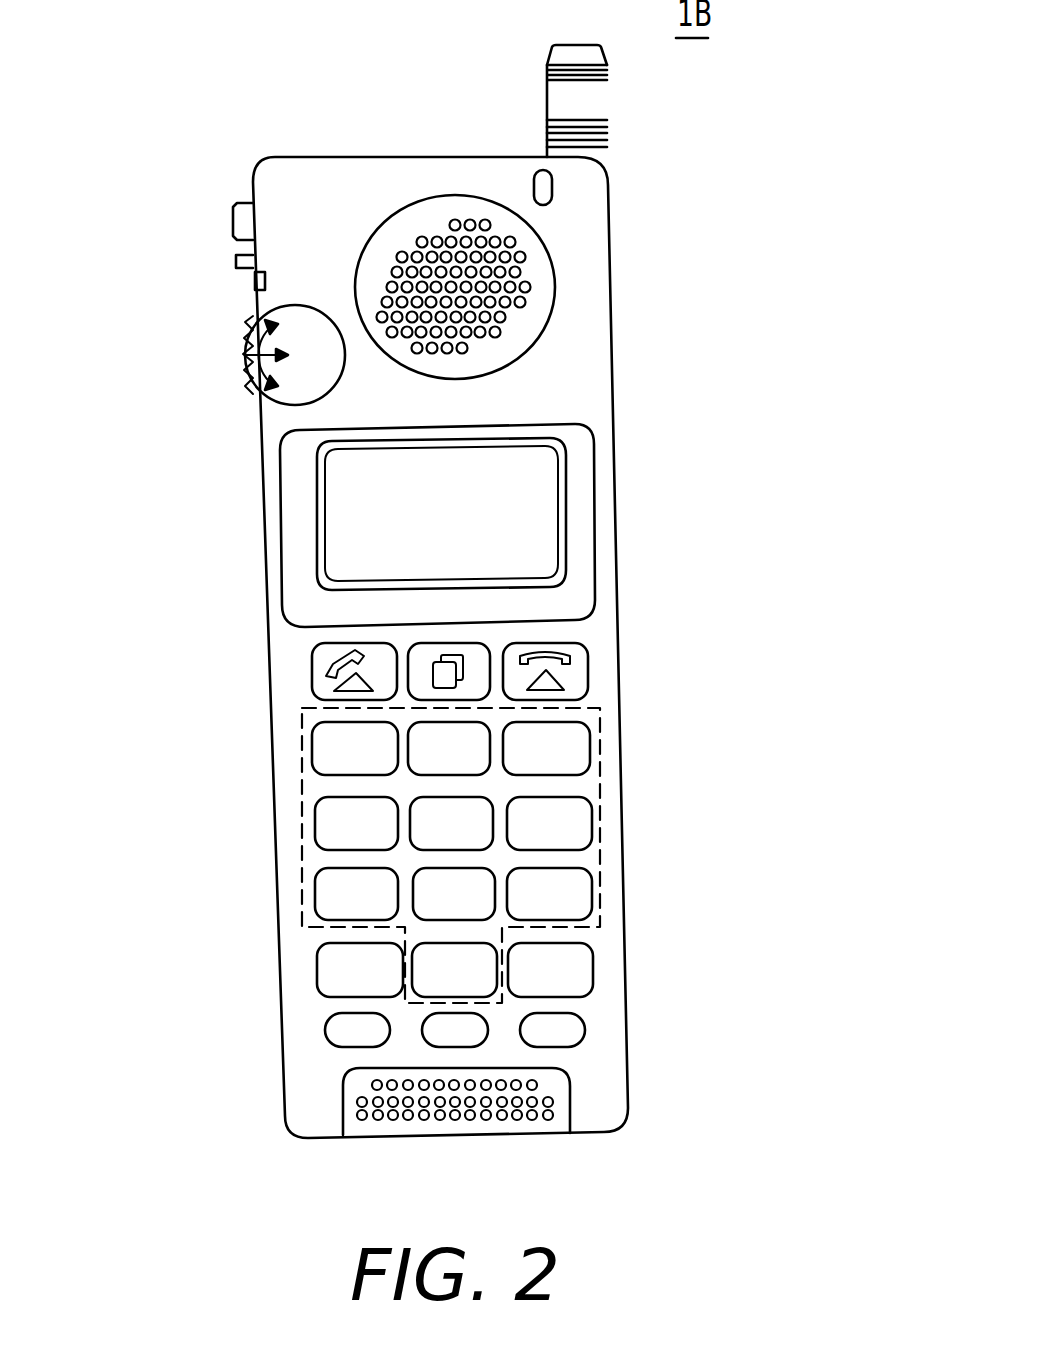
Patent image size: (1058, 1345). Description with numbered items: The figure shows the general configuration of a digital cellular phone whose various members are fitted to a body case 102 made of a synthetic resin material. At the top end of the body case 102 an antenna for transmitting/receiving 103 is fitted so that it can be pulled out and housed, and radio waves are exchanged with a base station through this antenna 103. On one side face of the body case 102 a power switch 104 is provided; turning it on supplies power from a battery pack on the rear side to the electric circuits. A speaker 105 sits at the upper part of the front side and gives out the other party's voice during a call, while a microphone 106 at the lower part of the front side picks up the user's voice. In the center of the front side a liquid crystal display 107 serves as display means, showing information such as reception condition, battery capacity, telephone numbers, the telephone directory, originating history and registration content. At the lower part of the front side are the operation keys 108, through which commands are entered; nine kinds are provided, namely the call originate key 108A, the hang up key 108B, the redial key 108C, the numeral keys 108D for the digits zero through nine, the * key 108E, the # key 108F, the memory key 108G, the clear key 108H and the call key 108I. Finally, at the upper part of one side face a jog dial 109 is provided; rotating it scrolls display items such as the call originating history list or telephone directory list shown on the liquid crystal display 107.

The body case 102 is at (610, 330).
The antenna for transmitting/receiving 103 is at (607, 100).
The power switch 104 is at (233, 208).
The speaker 105 is at (425, 215).
The microphone 106 is at (343, 1105).
The liquid crystal display 107 is at (545, 515).
The operation keys 108 is at (460, 839).
The call originate key 108A is at (312, 662).
The hang up key 108B is at (588, 672).
The redial key 108C is at (485, 641).
The numeral keys 108D is at (300, 741).
The * key 108E is at (317, 967).
The # key 108F is at (593, 966).
The memory key 108G is at (325, 1030).
The clear key 108H is at (422, 1042).
The call key 108I is at (585, 1030).
The jog dial 109 is at (240, 358).